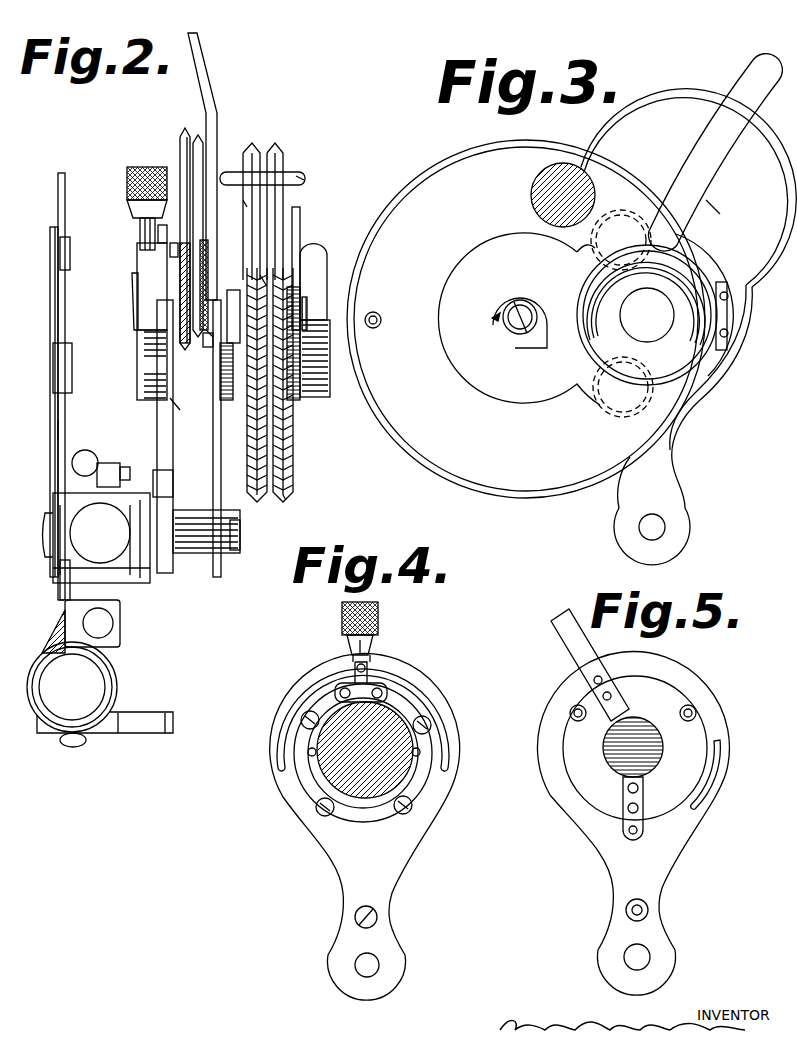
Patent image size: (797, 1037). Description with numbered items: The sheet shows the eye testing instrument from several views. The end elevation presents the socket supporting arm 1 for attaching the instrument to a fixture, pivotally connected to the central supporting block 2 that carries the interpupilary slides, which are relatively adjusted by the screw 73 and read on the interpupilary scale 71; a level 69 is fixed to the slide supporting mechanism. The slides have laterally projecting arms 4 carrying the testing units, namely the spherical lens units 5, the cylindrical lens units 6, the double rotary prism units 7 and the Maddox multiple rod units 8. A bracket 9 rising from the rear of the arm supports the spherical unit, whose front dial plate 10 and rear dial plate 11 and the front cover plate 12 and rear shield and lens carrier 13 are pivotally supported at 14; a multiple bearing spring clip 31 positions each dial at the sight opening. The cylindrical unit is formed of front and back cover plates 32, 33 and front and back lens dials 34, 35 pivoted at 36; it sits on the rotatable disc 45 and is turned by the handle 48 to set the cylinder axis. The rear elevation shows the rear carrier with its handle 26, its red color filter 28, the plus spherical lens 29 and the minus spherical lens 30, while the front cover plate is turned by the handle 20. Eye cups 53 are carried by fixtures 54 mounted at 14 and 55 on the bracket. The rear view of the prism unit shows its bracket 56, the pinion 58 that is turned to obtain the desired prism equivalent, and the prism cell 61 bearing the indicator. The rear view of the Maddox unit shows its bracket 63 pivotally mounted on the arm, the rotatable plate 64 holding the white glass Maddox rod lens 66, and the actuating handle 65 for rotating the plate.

In FIG. 2, the socket supporting arm 1 is at (107, 690).
In FIG. 2, the central supporting block 2 is at (63, 613).
In FIG. 2, the laterally projecting arms 4 is at (200, 555).
In FIG. 2, the spherical lens units 5 is at (284, 498).
In FIG. 3, the spherical lens units 5 is at (526, 313).
In FIG. 2, the cylindrical lens units 6 is at (205, 165).
In FIG. 3, the cylindrical lens units 6 is at (652, 142).
In FIG. 2, the double rotary prism units 7 is at (140, 312).
In FIG. 4, the double rotary prism units 7 is at (363, 737).
In FIG. 2, the Maddox multiple rod units 8 is at (47, 402).
In FIG. 5, the Maddox multiple rod units 8 is at (633, 755).
In FIG. 2, the bracket 9 is at (213, 450).
In FIG. 3, the bracket 9 is at (657, 462).
In FIG. 2, the front dial plate 10 is at (245, 205).
In FIG. 2, the rear dial plate 11 is at (278, 152).
In FIG. 2, the front cover plate 12 is at (250, 167).
In FIG. 2, the rear shield and lens carrier 13 is at (297, 207).
In FIG. 3, the rear shield and lens carrier 13 is at (526, 319).
In FIG. 2, the pivot 14 is at (217, 333).
In FIG. 3, the pivot 14 is at (515, 320).
In FIG. 2, the handle 20 is at (230, 173).
In FIG. 2, the handle 26 is at (292, 177).
In FIG. 3, the handle 26 is at (381, 304).
In FIG. 3, the color filter 28 is at (534, 187).
In FIG. 3, the plus 8.00 diopter spherical lens 29 is at (613, 253).
In FIG. 3, the minus 10 diopter spherical lens 30 is at (596, 405).
In FIG. 2, the multiple bearing spring clip 31 is at (265, 282).
In FIG. 2, the front cover plate 32 is at (182, 300).
In FIG. 2, the back cover plate 33 is at (203, 165).
In FIG. 3, the back cover plate 33 is at (713, 207).
In FIG. 2, the front lens dial 34 is at (207, 343).
In FIG. 2, the back lens dial 35 is at (213, 337).
In FIG. 2, the pivot 36 is at (172, 252).
In FIG. 2, the rotatable disc 45 is at (183, 415).
In FIG. 2, the handle 48 is at (208, 98).
In FIG. 3, the handle 48 is at (737, 107).
In FIG. 2, the eye cups 53 is at (318, 385).
In FIG. 3, the eye cups 53 is at (688, 363).
In FIG. 2, the fixtures 54 is at (300, 430).
In FIG. 3, the fixtures 54 is at (535, 322).
In FIG. 3, the mounting point 55 is at (728, 322).
In FIG. 2, the bracket 56 is at (163, 433).
In FIG. 4, the bracket 56 is at (365, 827).
In FIG. 2, the pinion 58 is at (127, 184).
In FIG. 4, the pinion 58 is at (378, 613).
In FIG. 4, the prism cell 61 is at (407, 778).
In FIG. 2, the bracket 63 is at (63, 430).
In FIG. 5, the bracket 63 is at (638, 867).
In FIG. 5, the rotatable plate 64 is at (583, 757).
In FIG. 2, the actuating handle 65 is at (61, 175).
In FIG. 5, the actuating handle 65 is at (565, 640).
In FIG. 5, the Maddox rod lens 66 is at (647, 747).
In FIG. 2, the level 69 is at (86, 463).
In FIG. 2, the interpupilary scale 71 is at (119, 470).
In FIG. 2, the screw 73 is at (97, 538).